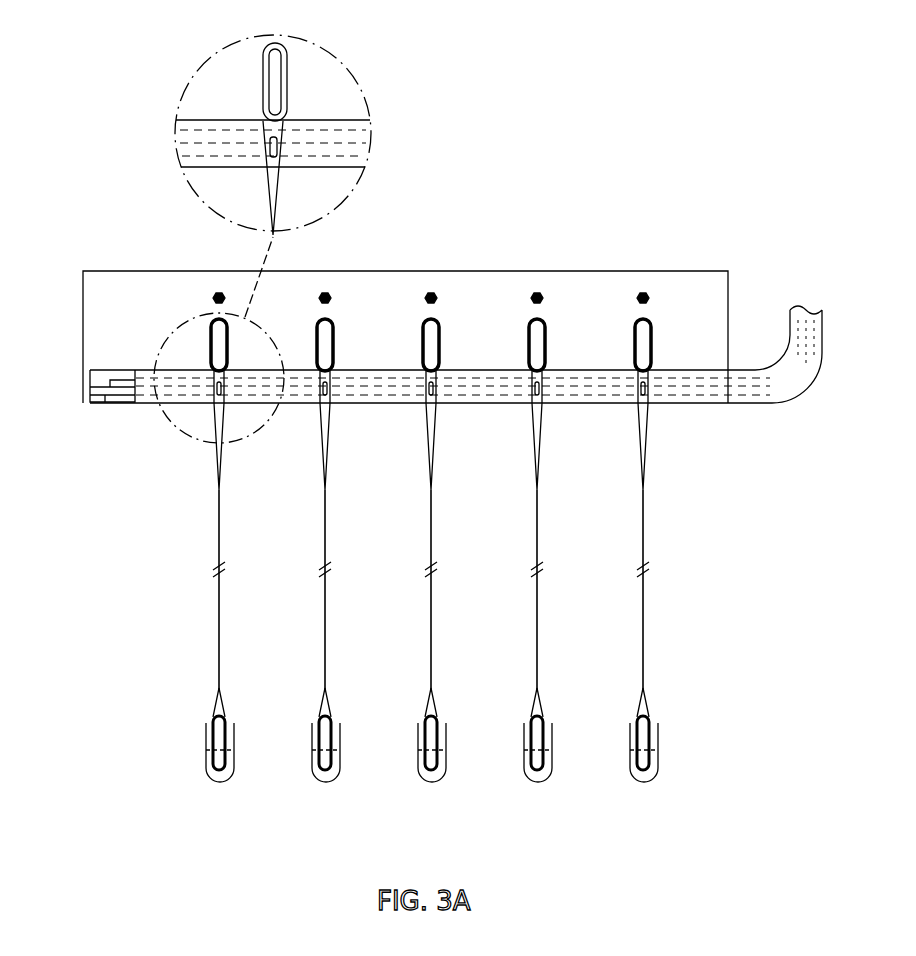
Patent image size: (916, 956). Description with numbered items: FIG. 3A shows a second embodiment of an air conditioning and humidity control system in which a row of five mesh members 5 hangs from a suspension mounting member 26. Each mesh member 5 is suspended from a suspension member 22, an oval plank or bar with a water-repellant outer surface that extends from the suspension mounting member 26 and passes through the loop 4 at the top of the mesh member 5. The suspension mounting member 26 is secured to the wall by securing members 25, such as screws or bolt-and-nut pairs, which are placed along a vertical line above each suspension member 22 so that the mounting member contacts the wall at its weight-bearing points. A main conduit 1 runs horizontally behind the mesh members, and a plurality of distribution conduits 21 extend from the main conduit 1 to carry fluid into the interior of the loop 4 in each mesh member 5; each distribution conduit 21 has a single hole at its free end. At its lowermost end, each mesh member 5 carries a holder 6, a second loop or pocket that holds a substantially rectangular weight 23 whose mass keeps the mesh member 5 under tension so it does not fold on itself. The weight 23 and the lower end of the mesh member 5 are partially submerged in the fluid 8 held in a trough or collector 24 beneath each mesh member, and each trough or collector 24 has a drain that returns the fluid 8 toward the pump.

The main conduit 1 is at (200, 185).
The loop 4 is at (285, 183).
The mesh member 5 is at (645, 507).
The holder 6 is at (636, 710).
The fluid 8 is at (630, 760).
The distribution conduit 21 is at (270, 147).
The suspension member 22 is at (290, 75).
The weight 23 is at (660, 735).
The trough or collector 24 is at (658, 772).
The securing member 25 is at (440, 290).
The suspension mounting member 26 is at (543, 271).